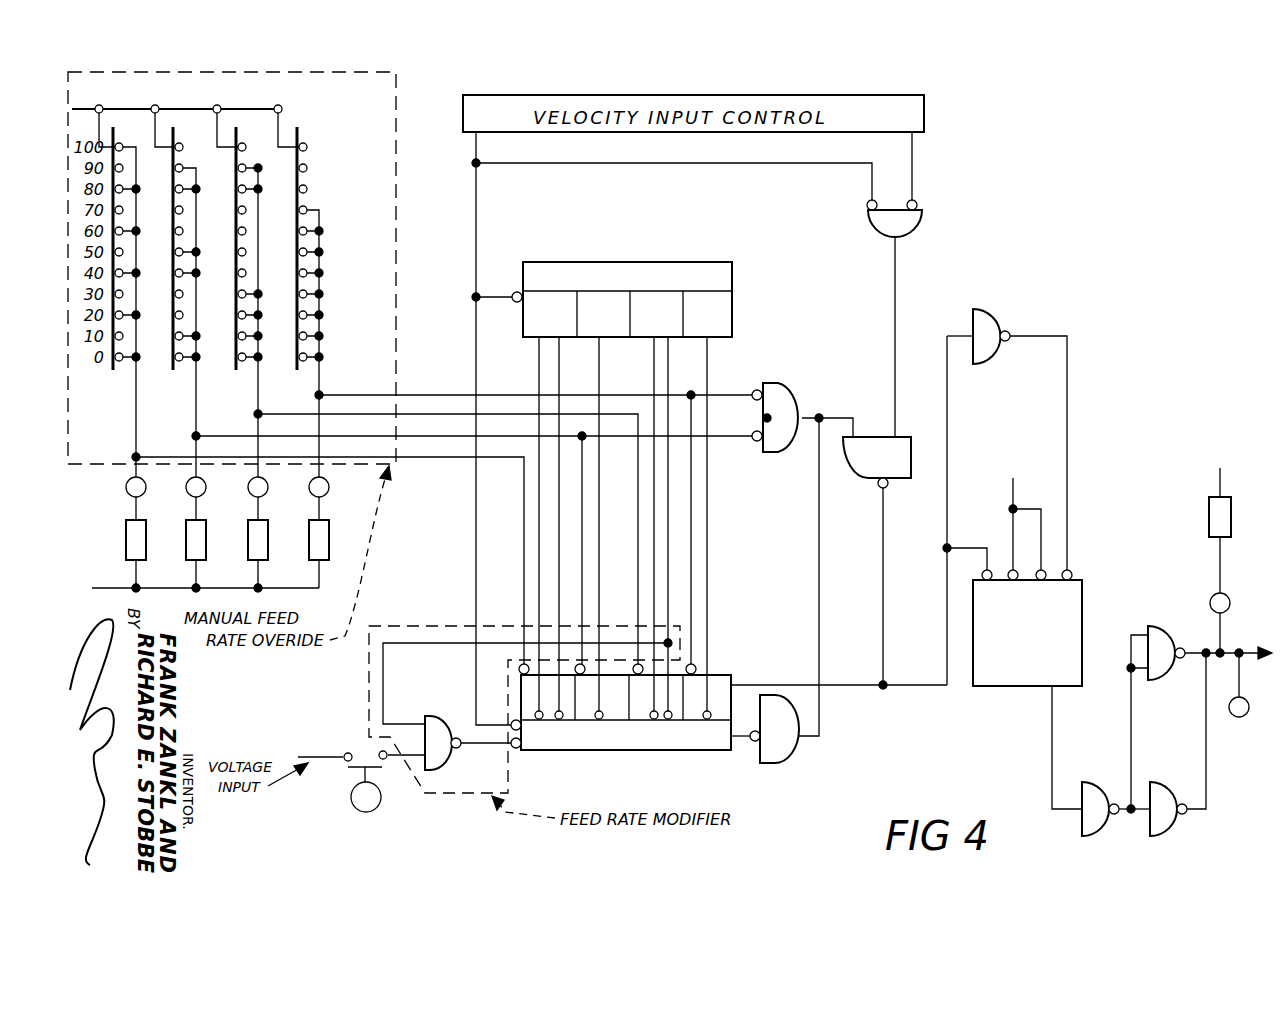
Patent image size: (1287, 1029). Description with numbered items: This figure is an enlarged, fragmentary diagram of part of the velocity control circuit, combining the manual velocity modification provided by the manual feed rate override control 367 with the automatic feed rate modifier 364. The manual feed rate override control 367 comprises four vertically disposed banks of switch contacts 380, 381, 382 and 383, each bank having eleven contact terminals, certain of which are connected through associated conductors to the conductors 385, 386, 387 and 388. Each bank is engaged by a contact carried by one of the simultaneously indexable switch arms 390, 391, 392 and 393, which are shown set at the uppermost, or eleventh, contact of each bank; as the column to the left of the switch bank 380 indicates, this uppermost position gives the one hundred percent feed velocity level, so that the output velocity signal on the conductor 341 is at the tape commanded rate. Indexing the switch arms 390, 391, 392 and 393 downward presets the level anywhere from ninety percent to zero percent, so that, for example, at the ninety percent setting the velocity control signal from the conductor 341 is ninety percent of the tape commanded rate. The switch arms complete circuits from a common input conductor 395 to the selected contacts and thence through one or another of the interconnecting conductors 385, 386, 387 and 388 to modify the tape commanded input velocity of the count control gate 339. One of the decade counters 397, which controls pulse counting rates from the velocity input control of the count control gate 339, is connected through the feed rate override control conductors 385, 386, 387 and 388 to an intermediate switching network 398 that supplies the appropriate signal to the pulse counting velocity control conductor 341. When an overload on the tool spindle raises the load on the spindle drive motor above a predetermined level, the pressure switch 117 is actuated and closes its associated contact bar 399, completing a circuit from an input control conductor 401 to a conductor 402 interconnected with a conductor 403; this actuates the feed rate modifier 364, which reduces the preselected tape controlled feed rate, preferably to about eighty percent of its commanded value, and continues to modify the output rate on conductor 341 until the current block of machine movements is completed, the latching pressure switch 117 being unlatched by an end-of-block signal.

The pressure switch 117 is at (372, 811).
The count control gate 339 is at (846, 330).
The output conductor 341 is at (1246, 648).
The feed rate modifier 364 is at (376, 622).
The manual feed rate override control 367 is at (398, 256).
The bank of switch contacts 380 is at (112, 372).
The bank of switch contacts 381 is at (172, 372).
The bank of switch contacts 382 is at (235, 372).
The bank of switch contacts 383 is at (296, 372).
The conductor 385 is at (326, 394).
The conductor 386 is at (404, 413).
The conductor 387 is at (424, 438).
The conductor 388 is at (504, 462).
The indexable switch arm 390 is at (102, 120).
The indexable switch arm 391 is at (158, 130).
The indexable switch arm 392 is at (219, 132).
The indexable switch arm 393 is at (283, 140).
The common input conductor 395 is at (75, 108).
The decade counter 397 is at (733, 308).
The intermediate switching network 398 is at (838, 741).
The contact bar 399 is at (352, 768).
The input control conductor 401 is at (305, 756).
The conductor 402 is at (410, 745).
The conductor 403 is at (404, 644).